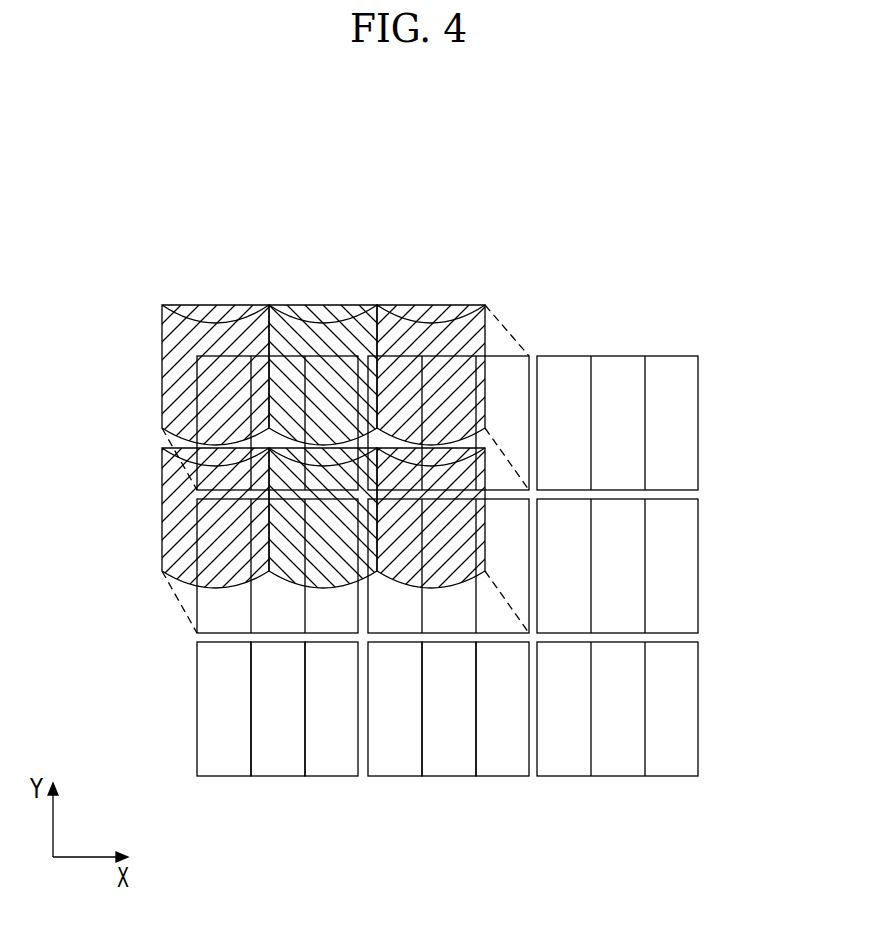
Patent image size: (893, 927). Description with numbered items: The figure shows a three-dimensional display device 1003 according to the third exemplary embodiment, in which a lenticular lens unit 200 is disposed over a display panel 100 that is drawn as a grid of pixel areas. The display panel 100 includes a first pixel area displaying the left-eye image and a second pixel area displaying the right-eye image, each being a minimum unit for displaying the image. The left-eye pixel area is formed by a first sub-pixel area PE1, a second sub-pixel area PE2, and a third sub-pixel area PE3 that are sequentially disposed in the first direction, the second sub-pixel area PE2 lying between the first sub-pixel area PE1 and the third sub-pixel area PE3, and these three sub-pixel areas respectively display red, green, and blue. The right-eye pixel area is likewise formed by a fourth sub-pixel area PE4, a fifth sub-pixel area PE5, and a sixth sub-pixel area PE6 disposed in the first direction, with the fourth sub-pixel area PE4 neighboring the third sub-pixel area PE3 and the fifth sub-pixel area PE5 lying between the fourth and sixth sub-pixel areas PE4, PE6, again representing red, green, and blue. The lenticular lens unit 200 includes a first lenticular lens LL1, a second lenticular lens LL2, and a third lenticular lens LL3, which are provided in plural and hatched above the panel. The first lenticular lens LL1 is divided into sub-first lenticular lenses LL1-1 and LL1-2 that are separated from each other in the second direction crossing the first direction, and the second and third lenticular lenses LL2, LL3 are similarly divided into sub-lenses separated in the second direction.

The 3D display device 1003 is at (440, 158).
The lenticular lens unit 200 is at (403, 236).
The first lenticular lens LL1 is at (213, 313).
The second lenticular lens LL2 is at (320, 313).
The third lenticular lens LL3 is at (432, 313).
The sub-first lenticular lens LL1-1 is at (172, 383).
The sub-first lenticular lens LL1-2 is at (172, 515).
The display panel 100 is at (703, 568).
The first sub-pixel area PE1 is at (226, 765).
The second sub-pixel area PE2 is at (277, 765).
The third sub-pixel area PE3 is at (332, 765).
The fourth sub-pixel area PE4 is at (398, 765).
The fifth sub-pixel area PE5 is at (453, 765).
The sixth sub-pixel area PE6 is at (508, 765).